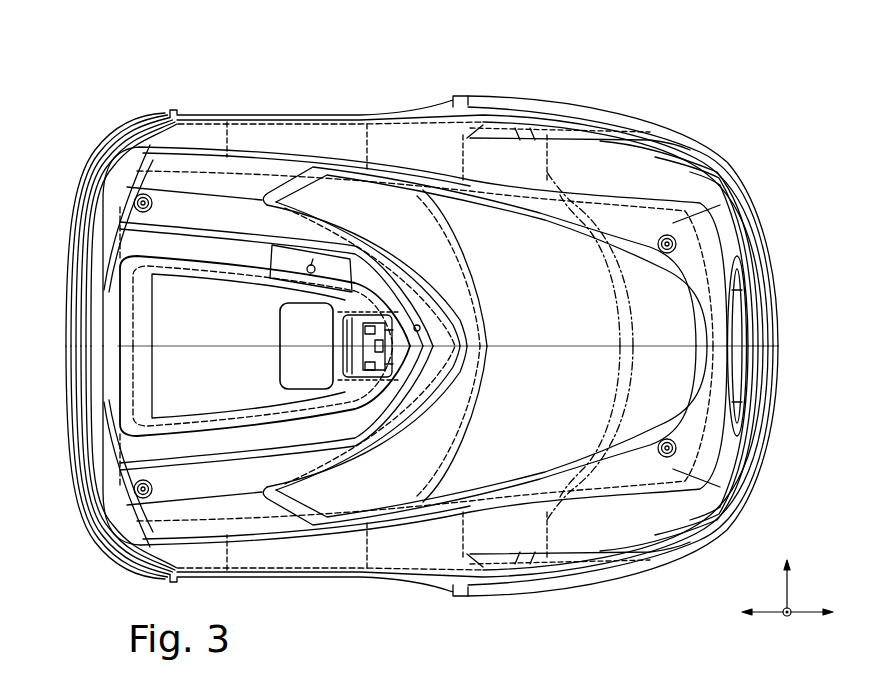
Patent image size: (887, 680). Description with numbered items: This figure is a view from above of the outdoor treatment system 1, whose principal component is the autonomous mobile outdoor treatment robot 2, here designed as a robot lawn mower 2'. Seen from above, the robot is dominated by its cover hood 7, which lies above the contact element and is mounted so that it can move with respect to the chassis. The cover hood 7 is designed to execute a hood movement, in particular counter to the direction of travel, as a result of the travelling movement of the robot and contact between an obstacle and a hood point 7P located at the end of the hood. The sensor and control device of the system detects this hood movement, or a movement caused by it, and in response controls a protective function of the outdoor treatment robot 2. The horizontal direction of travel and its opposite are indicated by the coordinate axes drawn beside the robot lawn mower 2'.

The outdoor treatment system 1 is at (162, 88).
The autonomous mobile outdoor treatment robot 2 is at (102, 319).
The robot lawn mower 2' is at (469, 346).
The cover hood 7 is at (781, 346).
The hood point 7P is at (781, 346).